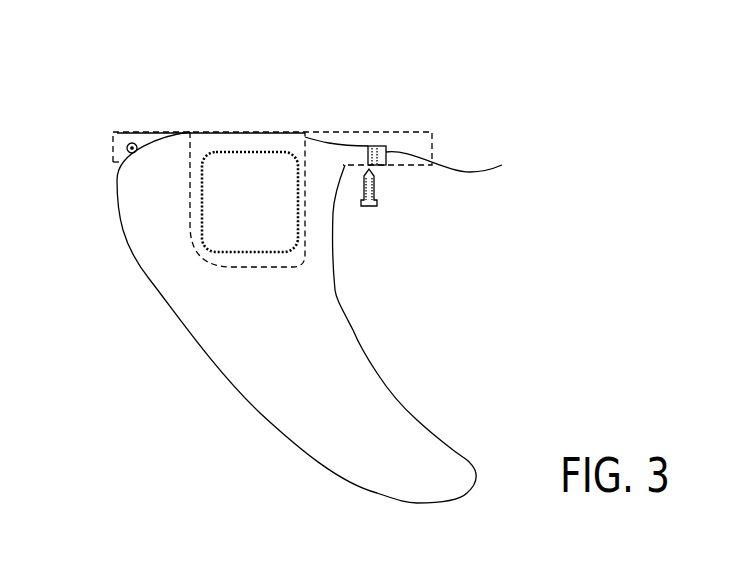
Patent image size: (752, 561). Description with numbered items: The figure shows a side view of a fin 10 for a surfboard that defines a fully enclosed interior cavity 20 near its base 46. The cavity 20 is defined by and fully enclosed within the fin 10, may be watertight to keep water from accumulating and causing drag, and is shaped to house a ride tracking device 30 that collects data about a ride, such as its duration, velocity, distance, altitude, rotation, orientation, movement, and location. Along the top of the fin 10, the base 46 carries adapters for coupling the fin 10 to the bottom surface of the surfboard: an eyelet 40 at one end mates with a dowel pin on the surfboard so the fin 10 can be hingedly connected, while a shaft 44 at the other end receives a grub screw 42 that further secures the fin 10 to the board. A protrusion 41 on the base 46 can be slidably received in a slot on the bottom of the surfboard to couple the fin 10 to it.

The fin 10 is at (400, 94).
The cavity 20 is at (300, 138).
The ride tracking device 30 is at (237, 209).
The eyelet 40 is at (127, 148).
The protrusion 41 is at (459, 156).
The grub screw 42 is at (375, 185).
The shaft 44 is at (368, 146).
The base 46 is at (121, 133).